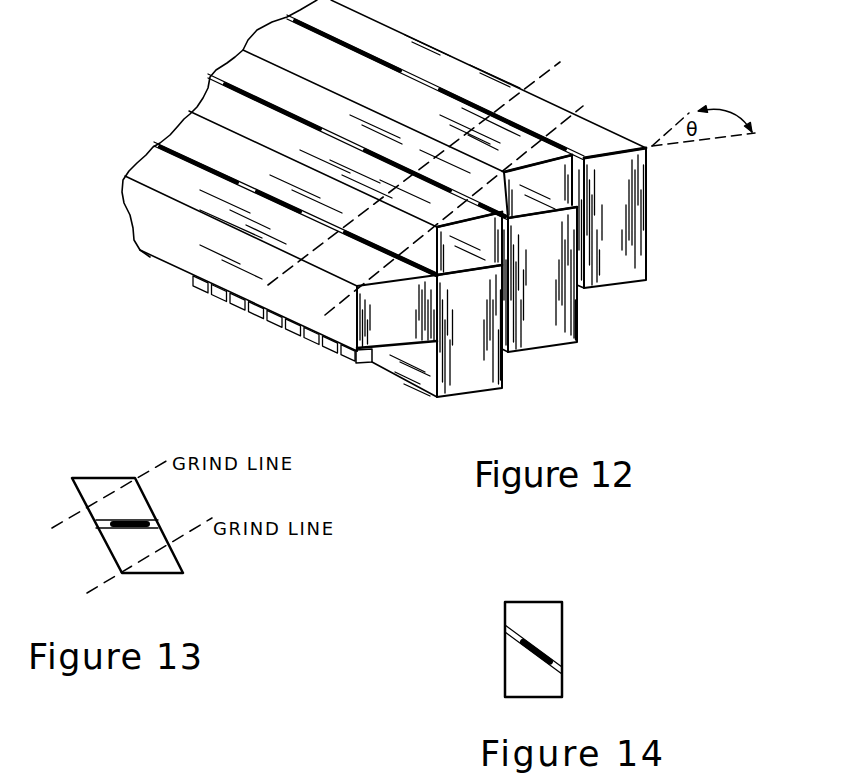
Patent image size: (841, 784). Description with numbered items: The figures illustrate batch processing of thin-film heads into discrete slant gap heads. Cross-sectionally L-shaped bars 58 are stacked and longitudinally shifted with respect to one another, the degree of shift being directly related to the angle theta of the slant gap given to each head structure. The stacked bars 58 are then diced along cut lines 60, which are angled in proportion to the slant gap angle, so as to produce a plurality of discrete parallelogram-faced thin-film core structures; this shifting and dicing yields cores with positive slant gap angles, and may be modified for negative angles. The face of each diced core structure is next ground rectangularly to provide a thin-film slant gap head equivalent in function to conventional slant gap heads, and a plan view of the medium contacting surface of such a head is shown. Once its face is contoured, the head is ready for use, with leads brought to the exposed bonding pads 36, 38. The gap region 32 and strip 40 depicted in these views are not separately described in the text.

In FIG. 12, the gap 32 is at (497, 118).
In FIG. 13, the gap 32 is at (147, 528).
In FIG. 14, the gap 32 is at (527, 645).
In FIG. 12, the hinge strip 40 is at (384, 156).
In FIG. 13, the hinge strip 40 is at (125, 522).
In FIG. 14, the hinge strip 40 is at (532, 641).
In FIG. 12, the bonding pad 36 is at (330, 348).
In FIG. 12, the bonding pad 38 is at (362, 357).
In FIG. 12, the L-shaped bar 58 is at (493, 388).
In FIG. 12, the cut line 60 is at (513, 88).